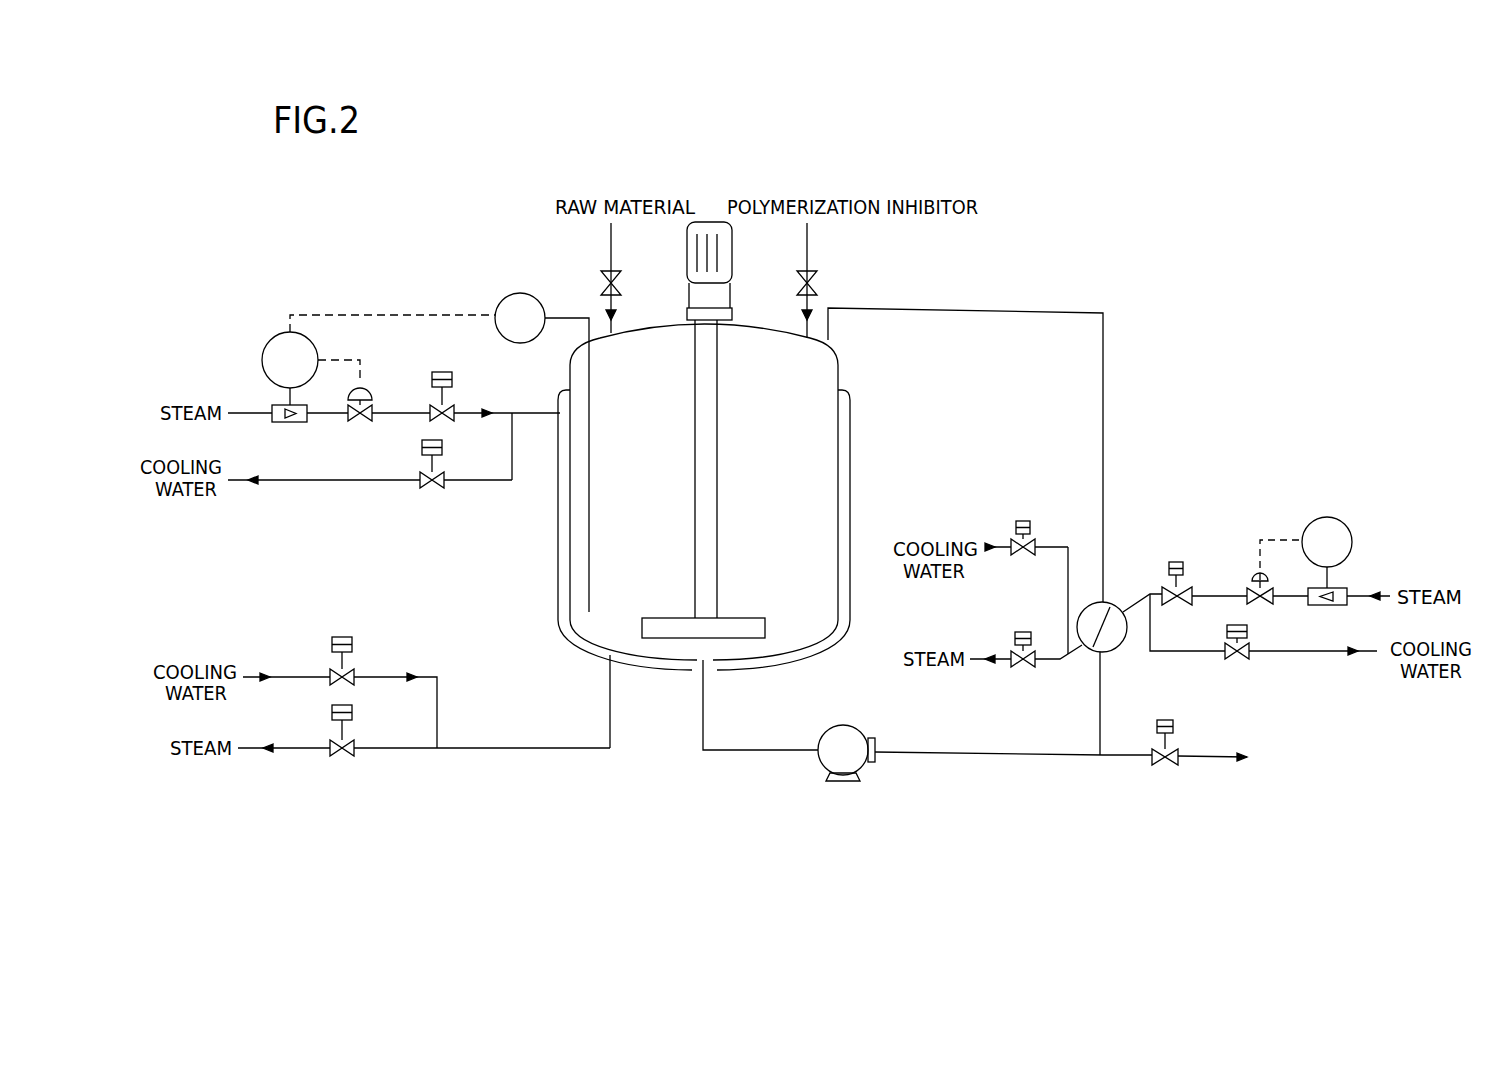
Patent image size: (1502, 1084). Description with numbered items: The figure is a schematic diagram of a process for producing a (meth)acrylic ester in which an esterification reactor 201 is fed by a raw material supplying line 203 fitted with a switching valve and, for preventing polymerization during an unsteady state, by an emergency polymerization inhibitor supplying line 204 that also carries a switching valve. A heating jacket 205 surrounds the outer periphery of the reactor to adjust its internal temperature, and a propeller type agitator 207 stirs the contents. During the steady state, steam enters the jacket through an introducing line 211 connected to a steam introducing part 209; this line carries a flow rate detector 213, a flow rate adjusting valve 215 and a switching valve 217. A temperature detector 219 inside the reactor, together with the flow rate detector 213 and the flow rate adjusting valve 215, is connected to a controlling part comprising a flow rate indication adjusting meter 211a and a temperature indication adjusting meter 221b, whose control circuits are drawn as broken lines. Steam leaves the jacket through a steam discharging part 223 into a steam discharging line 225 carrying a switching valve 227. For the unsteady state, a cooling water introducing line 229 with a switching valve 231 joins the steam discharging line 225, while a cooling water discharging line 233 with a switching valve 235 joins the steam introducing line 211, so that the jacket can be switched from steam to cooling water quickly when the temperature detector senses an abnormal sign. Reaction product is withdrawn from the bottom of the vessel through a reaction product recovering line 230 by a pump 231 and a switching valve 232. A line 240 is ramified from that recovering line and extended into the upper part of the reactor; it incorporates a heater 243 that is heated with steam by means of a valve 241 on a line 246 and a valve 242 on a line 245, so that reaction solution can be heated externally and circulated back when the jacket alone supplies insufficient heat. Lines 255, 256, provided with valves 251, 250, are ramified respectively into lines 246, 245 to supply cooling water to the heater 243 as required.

The esterification reactor 201 is at (816, 368).
The raw material supplying line 203 is at (612, 255).
The emergency polymerization inhibitor supplying line 204 is at (808, 255).
The heating jacket 205 is at (851, 535).
The propeller type agitator 207 is at (738, 627).
The steam introducing part 209 is at (560, 418).
The introducing line 211 is at (398, 410).
The flow rate indication adjusting meter 211a is at (273, 350).
The temperature indication adjusting meter 221b is at (520, 297).
The flow rate detector 213 is at (290, 422).
The flow rate adjusting valve 215 is at (360, 422).
The switching valve 217 is at (455, 404).
The temperature detector 219 is at (585, 612).
The steam discharging part 223 is at (606, 660).
The steam discharging line 225 is at (530, 757).
The switching valve 227 is at (342, 757).
The cooling water introducing line 229 is at (396, 676).
The switching valve / pump 231 is at (343, 637).
The reaction product recovering line 230 is at (776, 756).
The switching valve 232 is at (1165, 766).
The cooling water discharging line 233 is at (358, 482).
The switching valve 235 is at (435, 480).
The line 240 is at (1103, 415).
The valve 241 is at (1040, 620).
The valve 242 is at (1185, 565).
The heater 243 is at (1106, 655).
The line 245 is at (1292, 600).
The line 246 is at (978, 661).
The valve 250 is at (1228, 661).
The valve 251 is at (1017, 515).
The line 255 is at (1068, 545).
The line 256 is at (1338, 655).